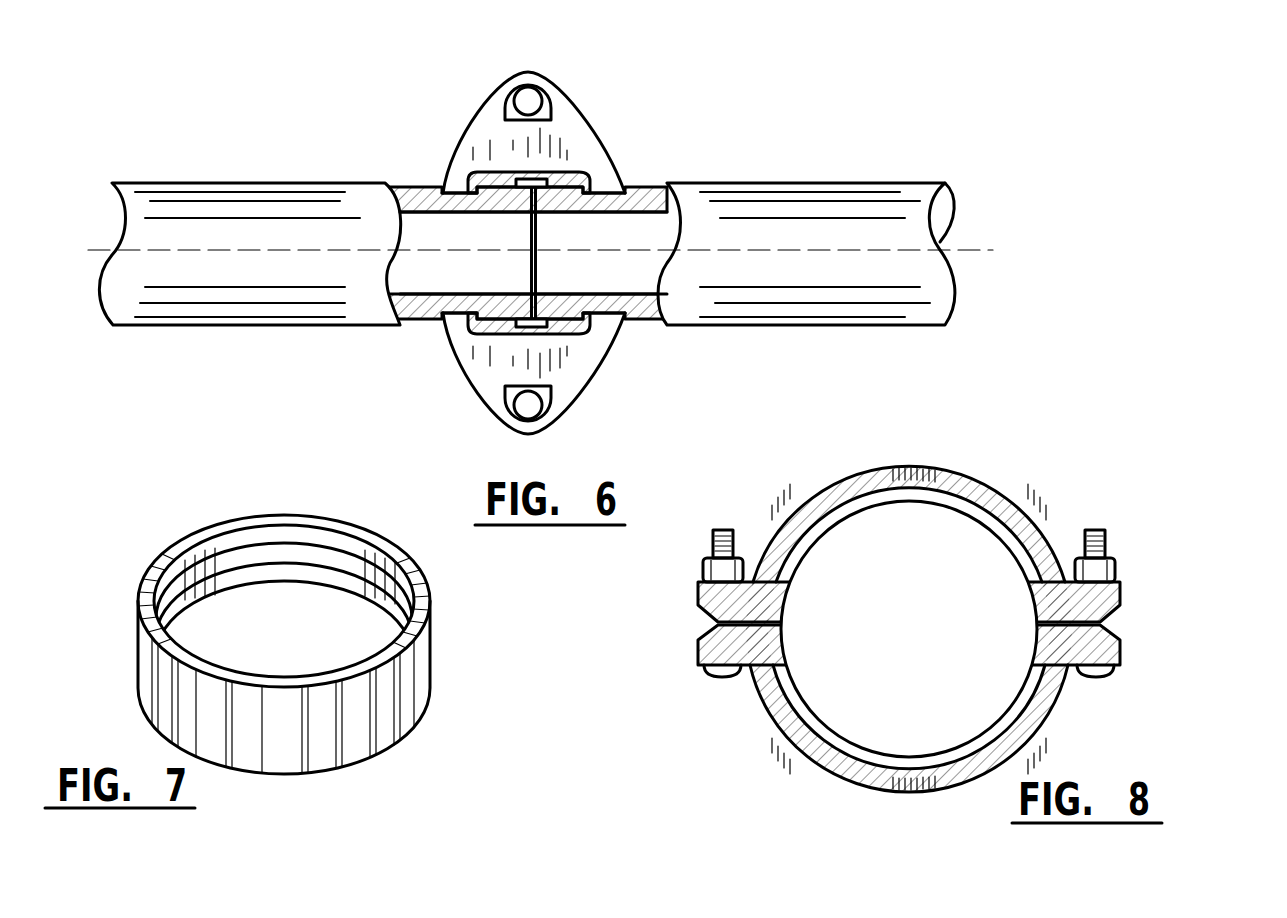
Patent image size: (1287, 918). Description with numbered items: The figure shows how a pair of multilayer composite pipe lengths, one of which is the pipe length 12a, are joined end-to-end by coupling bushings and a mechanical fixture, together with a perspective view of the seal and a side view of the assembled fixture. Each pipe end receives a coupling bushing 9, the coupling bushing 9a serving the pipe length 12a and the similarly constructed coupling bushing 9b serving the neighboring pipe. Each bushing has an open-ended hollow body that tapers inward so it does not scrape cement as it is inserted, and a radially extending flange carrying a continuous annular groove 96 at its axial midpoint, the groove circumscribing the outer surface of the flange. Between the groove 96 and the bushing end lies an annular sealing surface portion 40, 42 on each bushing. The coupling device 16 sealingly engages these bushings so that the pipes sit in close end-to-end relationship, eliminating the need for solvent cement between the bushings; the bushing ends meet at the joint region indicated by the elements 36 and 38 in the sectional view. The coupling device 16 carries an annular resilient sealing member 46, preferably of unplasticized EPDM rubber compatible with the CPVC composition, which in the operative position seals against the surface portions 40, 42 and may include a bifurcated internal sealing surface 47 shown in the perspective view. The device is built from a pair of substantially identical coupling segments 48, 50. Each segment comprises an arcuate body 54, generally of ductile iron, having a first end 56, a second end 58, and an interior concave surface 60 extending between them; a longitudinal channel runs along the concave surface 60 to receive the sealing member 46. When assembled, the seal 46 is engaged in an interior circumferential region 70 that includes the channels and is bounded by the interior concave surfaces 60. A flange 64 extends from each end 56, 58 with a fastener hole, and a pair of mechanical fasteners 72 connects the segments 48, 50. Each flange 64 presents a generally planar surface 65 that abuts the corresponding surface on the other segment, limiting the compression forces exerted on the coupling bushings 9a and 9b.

In FIG. 7, the coupling bushing 9 is at (205, 512).
In FIG. 6, the coupling bushing 9a is at (417, 197).
In FIG. 6, the coupling bushing 9b is at (670, 185).
In FIG. 6, the multilayer composite pipe length 12a is at (265, 183).
In FIG. 6, the coupling device 16 is at (563, 102).
In FIG. 8, the coupling device 16 is at (1042, 488).
In FIG. 6, the pipe end 36 is at (530, 260).
In FIG. 6, the seam 38 is at (536, 232).
In FIG. 6, the annular sealing surface portion 40 is at (472, 318).
In FIG. 6, the annular sealing surface portion 42 is at (573, 313).
In FIG. 6, the sealing member 46 is at (583, 178).
In FIG. 8, the sealing member 46 is at (880, 507).
In FIG. 6, the bifurcated internal sealing surface 47 is at (573, 340).
In FIG. 7, the bifurcated internal sealing surface 47 is at (336, 578).
In FIG. 8, the coupling segment 48 is at (960, 487).
In FIG. 8, the coupling segment 50 is at (855, 765).
In FIG. 8, the arcuate body 54 is at (830, 490).
In FIG. 8, the first end 56 is at (753, 596).
In FIG. 8, the second end 58 is at (1065, 596).
In FIG. 6, the interior concave surface 60 is at (497, 168).
In FIG. 8, the flange 64 is at (727, 607).
In FIG. 8, the planar surface 65 is at (712, 636).
In FIG. 6, the interior circumferential region 70 is at (593, 187).
In FIG. 8, the mechanical fastener 72 is at (727, 667).
In FIG. 6, the annular groove 96 is at (447, 193).